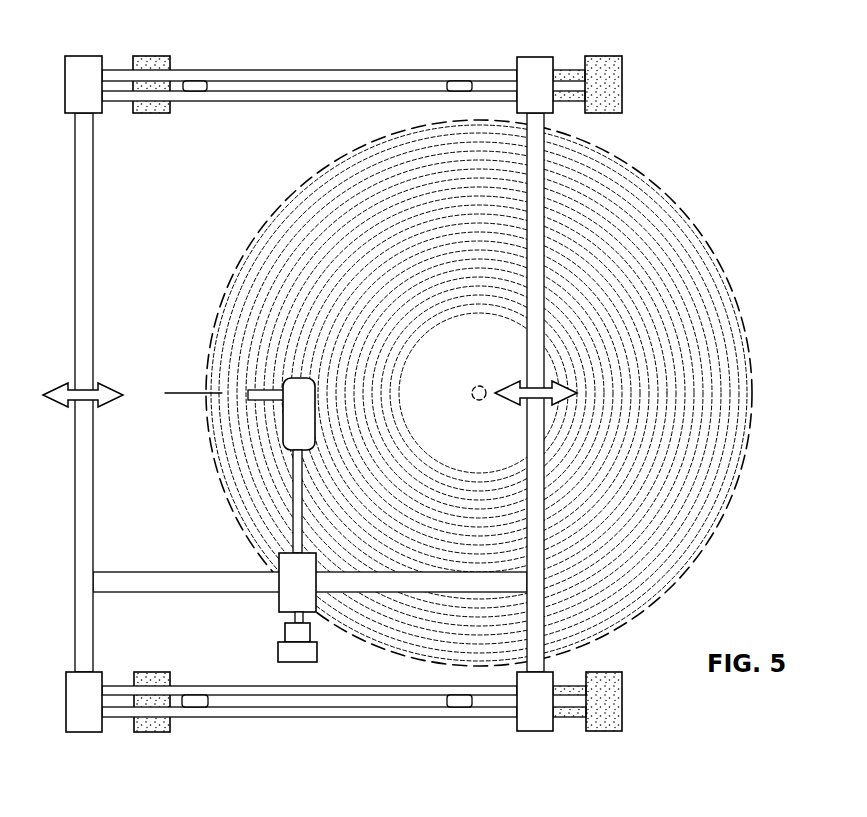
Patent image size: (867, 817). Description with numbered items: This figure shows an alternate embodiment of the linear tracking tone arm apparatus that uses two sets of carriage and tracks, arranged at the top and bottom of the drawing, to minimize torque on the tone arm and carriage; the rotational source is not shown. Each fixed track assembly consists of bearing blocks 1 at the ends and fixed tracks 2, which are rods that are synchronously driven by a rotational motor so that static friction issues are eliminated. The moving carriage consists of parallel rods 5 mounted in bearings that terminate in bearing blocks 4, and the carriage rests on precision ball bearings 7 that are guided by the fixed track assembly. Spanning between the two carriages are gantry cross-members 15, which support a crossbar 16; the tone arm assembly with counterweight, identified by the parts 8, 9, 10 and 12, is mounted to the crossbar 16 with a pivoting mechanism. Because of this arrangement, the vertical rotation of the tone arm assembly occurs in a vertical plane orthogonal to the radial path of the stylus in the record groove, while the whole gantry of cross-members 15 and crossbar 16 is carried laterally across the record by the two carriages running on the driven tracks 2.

The bearing block 1 is at (155, 115).
The fixed track 2 is at (565, 73).
The bearing block 4 is at (88, 56).
The parallel rod 5 is at (378, 76).
The precision ball bearing 7 is at (197, 83).
The tone arm assembly 8 is at (293, 580).
The tone arm assembly 9 is at (292, 520).
The tone arm assembly 10 is at (290, 378).
The tone arm assembly 12 is at (290, 655).
The gantry cross-member 15 is at (83, 318).
The crossbar 16 is at (361, 582).